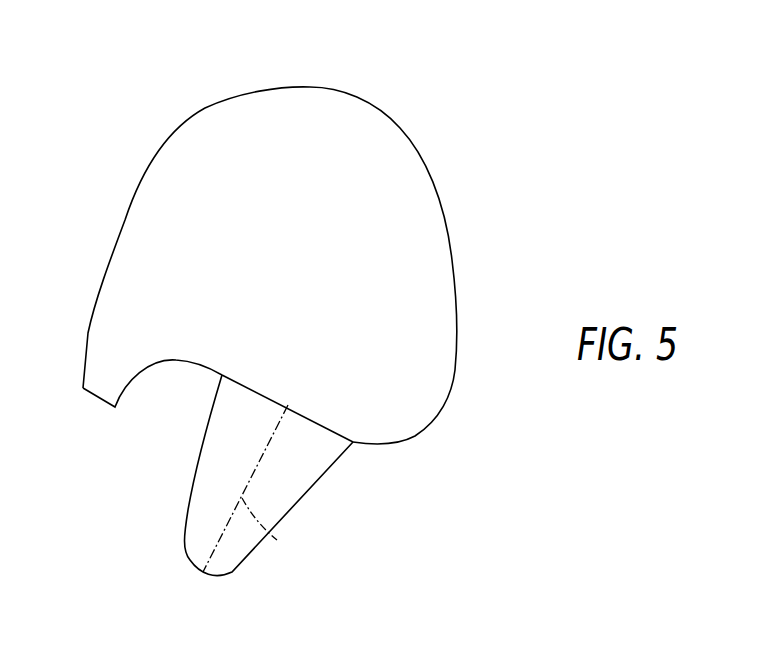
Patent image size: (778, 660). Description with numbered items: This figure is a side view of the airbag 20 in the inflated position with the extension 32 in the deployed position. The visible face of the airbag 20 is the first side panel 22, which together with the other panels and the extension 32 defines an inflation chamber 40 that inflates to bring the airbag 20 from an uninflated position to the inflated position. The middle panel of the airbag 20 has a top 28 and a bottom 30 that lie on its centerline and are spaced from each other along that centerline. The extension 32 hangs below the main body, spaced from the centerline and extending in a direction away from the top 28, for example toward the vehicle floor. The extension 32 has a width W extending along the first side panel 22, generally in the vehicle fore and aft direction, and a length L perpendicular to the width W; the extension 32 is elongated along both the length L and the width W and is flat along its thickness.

The airbag 20 is at (474, 168).
The first side panel 22 is at (205, 200).
The top 28 is at (290, 87).
The bottom 30 is at (389, 446).
The extension 32 is at (187, 498).
The inflation chamber 40 is at (426, 214).
The width W is at (262, 402).
The length L is at (277, 540).